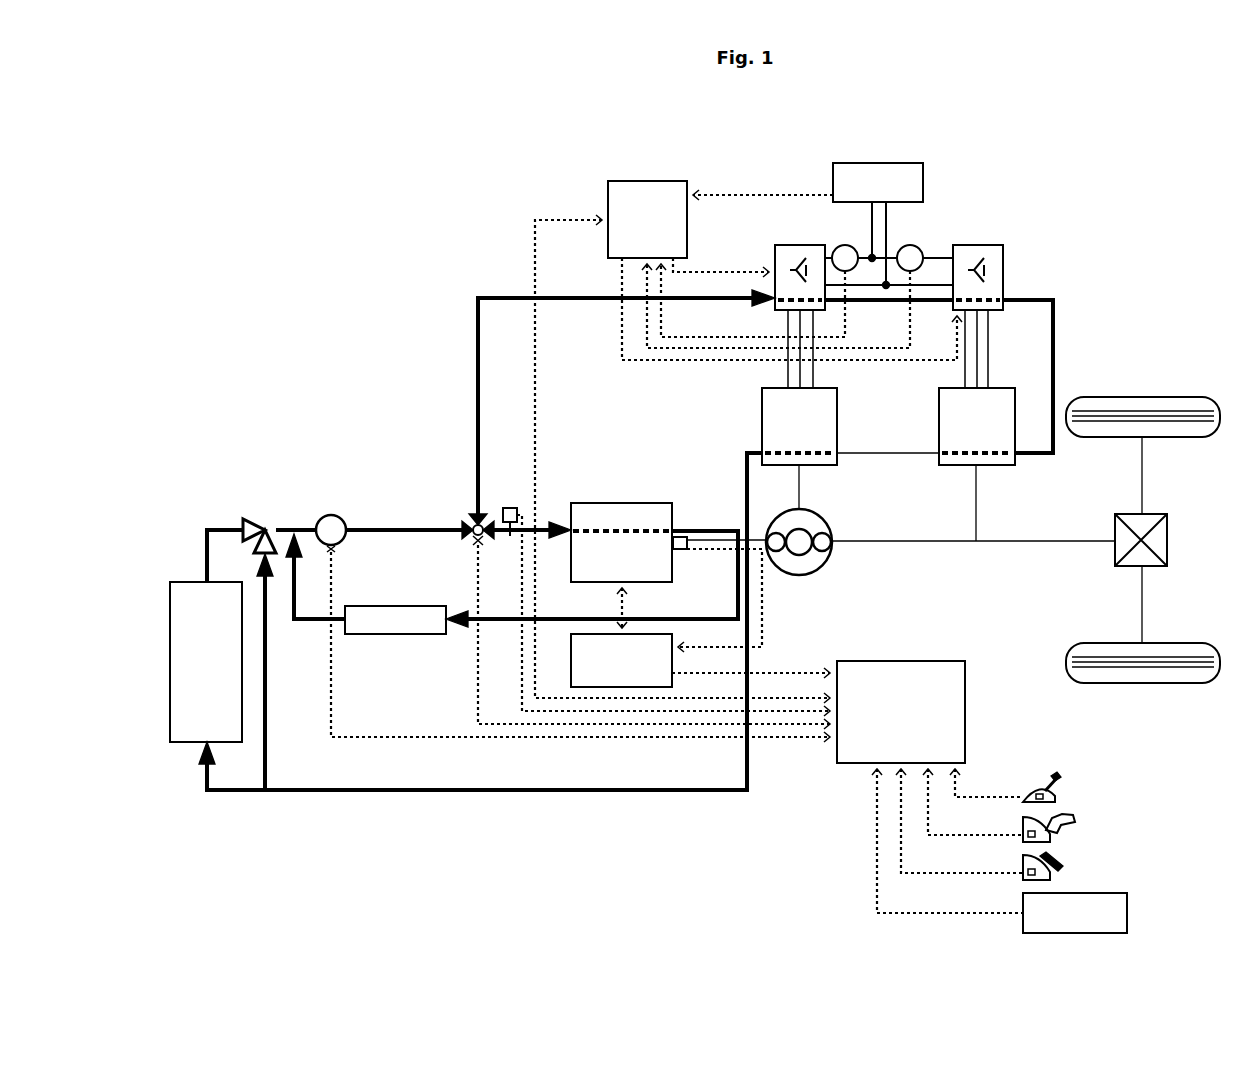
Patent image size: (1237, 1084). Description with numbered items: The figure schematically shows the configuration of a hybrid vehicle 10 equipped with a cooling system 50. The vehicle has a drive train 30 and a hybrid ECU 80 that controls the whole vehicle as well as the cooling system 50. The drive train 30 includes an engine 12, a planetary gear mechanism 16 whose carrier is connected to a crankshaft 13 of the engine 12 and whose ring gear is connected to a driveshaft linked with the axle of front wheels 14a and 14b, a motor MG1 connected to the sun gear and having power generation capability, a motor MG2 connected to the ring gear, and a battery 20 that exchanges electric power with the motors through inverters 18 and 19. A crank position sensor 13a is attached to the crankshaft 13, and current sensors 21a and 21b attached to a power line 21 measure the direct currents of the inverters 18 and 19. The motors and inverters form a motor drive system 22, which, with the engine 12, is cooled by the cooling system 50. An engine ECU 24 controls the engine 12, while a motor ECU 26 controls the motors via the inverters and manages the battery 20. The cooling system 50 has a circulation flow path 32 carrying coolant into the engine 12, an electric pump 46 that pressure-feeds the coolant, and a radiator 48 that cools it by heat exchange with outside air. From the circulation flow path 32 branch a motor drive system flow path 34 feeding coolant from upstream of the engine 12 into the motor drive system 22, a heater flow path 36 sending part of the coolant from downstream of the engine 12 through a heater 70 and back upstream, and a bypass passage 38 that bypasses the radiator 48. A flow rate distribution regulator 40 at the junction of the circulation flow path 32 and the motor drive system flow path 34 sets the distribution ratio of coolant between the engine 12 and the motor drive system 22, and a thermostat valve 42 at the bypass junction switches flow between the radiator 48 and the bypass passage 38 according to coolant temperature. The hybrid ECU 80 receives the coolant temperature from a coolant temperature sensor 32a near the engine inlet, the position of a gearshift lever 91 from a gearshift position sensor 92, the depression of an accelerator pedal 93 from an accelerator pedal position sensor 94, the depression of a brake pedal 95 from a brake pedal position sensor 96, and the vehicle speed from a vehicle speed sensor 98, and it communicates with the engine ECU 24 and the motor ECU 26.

The hybrid vehicle 10 is at (345, 300).
The engine 12 is at (649, 503).
The crankshaft 13 is at (752, 538).
The crank position sensor 13a is at (694, 551).
The front wheel 14a is at (1152, 395).
The front wheel 14b is at (1152, 641).
The planetary gear mechanism 16 is at (823, 515).
The inverter 18 is at (775, 314).
The inverter 19 is at (1000, 312).
The battery 20 is at (878, 163).
The power line 21 is at (920, 285).
The current sensor 21a is at (845, 245).
The current sensor 21b is at (910, 245).
The motor drive system 22 is at (1030, 222).
The engine ECU 24 is at (571, 662).
The motor ECU 26 is at (651, 181).
The drive train 30 is at (658, 445).
The circulation flow path 32 is at (372, 528).
The coolant temperature sensor 32a is at (510, 507).
The motor drive system flow path 34 is at (476, 352).
The heater flow path 36 is at (309, 622).
The bypass passage 38 is at (266, 760).
The flow rate distribution regulator 40 is at (475, 513).
The thermostat valve 42 is at (248, 518).
The electric pump 46 is at (331, 514).
The radiator 48 is at (187, 582).
The cooling system 50 is at (387, 445).
The heater 70 is at (398, 607).
The hybrid ECU 80 is at (930, 661).
The gearshift lever 91 is at (1060, 781).
The gearshift position sensor 92 is at (1058, 797).
The accelerator pedal 93 is at (1075, 818).
The accelerator pedal position sensor 94 is at (1052, 837).
The brake pedal 95 is at (1062, 863).
The brake pedal position sensor 96 is at (1052, 875).
The vehicle speed sensor 98 is at (1127, 913).
The motor MG1 is at (760, 408).
The motor MG2 is at (938, 408).